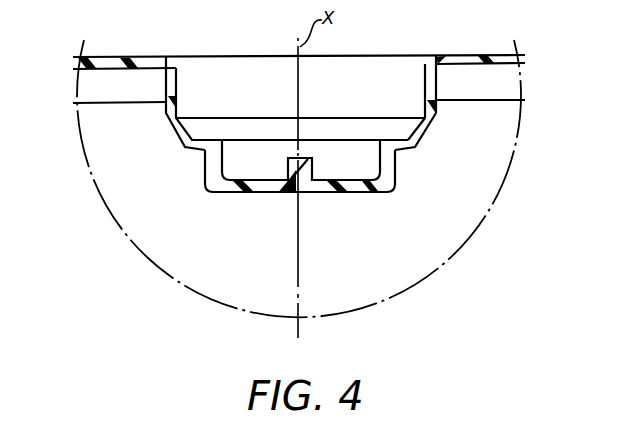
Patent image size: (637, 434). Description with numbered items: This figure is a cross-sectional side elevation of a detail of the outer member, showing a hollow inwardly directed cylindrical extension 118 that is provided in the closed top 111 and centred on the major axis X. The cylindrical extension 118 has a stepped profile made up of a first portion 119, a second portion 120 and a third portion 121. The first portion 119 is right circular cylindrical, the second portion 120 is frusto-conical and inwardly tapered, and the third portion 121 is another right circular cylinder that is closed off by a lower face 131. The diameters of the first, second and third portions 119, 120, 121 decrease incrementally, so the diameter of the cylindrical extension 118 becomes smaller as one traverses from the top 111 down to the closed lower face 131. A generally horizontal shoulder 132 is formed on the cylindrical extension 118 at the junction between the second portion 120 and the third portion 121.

The closed top 111 is at (108, 57).
The cylindrical extension 118 is at (191, 209).
The first portion 119 is at (441, 107).
The second portion 120 is at (436, 137).
The third portion 121 is at (399, 166).
The lower face 131 is at (343, 193).
The shoulder 132 is at (183, 150).